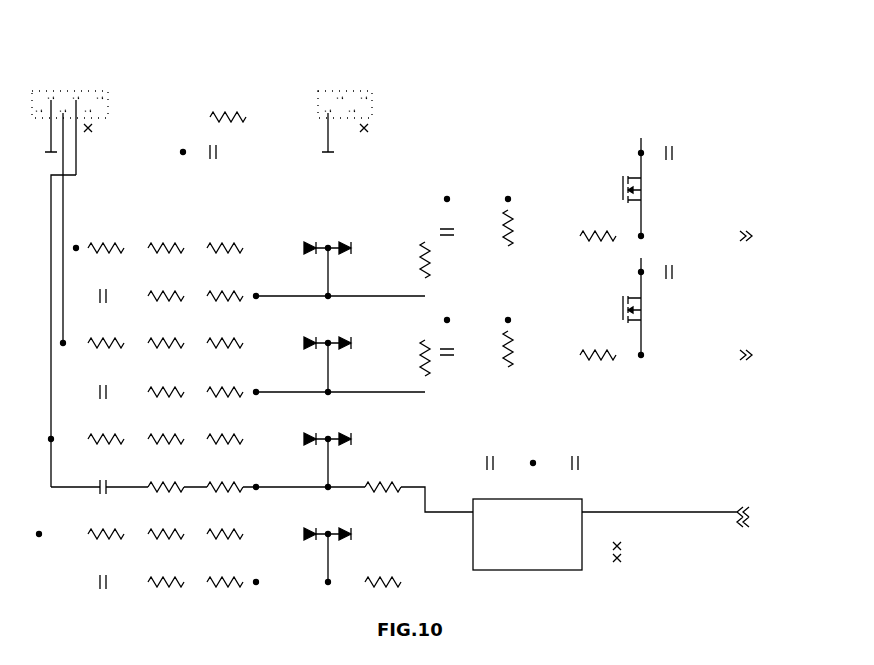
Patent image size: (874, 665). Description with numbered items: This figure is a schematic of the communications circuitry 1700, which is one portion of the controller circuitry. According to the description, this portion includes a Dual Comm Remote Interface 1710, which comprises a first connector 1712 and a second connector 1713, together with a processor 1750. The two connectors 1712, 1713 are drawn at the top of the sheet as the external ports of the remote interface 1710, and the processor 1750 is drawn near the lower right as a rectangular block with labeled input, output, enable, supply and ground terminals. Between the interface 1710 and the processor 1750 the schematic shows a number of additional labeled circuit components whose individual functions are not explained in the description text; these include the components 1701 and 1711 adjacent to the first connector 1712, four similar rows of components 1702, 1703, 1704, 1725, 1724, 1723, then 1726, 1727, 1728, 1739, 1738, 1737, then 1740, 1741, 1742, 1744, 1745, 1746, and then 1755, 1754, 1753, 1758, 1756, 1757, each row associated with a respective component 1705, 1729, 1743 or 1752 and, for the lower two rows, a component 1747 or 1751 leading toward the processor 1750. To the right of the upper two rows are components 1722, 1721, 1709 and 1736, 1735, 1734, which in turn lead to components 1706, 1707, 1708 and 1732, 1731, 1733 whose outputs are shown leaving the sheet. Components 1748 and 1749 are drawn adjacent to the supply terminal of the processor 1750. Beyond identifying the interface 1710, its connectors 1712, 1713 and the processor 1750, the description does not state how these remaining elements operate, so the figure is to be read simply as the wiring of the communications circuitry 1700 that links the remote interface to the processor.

The communications circuit 1700 is at (404, 313).
The resistor 1701 is at (228, 108).
The resistor 1702 is at (106, 239).
The resistor 1703 is at (166, 239).
The resistor 1704 is at (225, 239).
The diode pair 1705 is at (327, 240).
The MOSFET transistor 1706 is at (654, 190).
The capacitor 1707 is at (688, 146).
The resistor 1708 is at (598, 227).
The resistor 1709 is at (529, 228).
The Dual Comm Remote Interface 1710 is at (230, 116).
The capacitor 1711 is at (232, 145).
The connector 1712 is at (93, 128).
The connector 1713 is at (376, 122).
The capacitor 1721 is at (467, 225).
The resistor 1722 is at (410, 260).
The resistor 1723 is at (225, 285).
The resistor 1724 is at (166, 285).
The capacitor 1725 is at (104, 282).
The resistor 1726 is at (106, 334).
The resistor 1727 is at (166, 334).
The resistor 1728 is at (225, 334).
The diode pair 1729 is at (327, 335).
The capacitor 1731 is at (688, 265).
The MOSFET transistor 1732 is at (653, 309).
The resistor 1733 is at (598, 346).
The resistor 1734 is at (529, 349).
The capacitor 1735 is at (467, 345).
The resistor 1736 is at (410, 358).
The resistor 1737 is at (225, 381).
The resistor 1738 is at (166, 381).
The capacitor 1739 is at (104, 378).
The resistor 1740 is at (106, 430).
The resistor 1741 is at (166, 430).
The resistor 1742 is at (225, 430).
The diode pair 1743 is at (327, 431).
The capacitor 1744 is at (104, 473).
The resistor 1745 is at (166, 476).
The resistor 1746 is at (225, 476).
The resistor 1747 is at (383, 479).
The capacitor 1748 is at (490, 449).
The capacitor 1749 is at (574, 449).
The processor 1750 is at (527, 534).
The resistor 1751 is at (383, 574).
The diode pair 1752 is at (327, 526).
The resistor 1753 is at (225, 525).
The resistor 1754 is at (166, 525).
The resistor 1755 is at (106, 525).
The resistor 1756 is at (166, 571).
The resistor 1757 is at (225, 571).
The capacitor 1758 is at (104, 568).